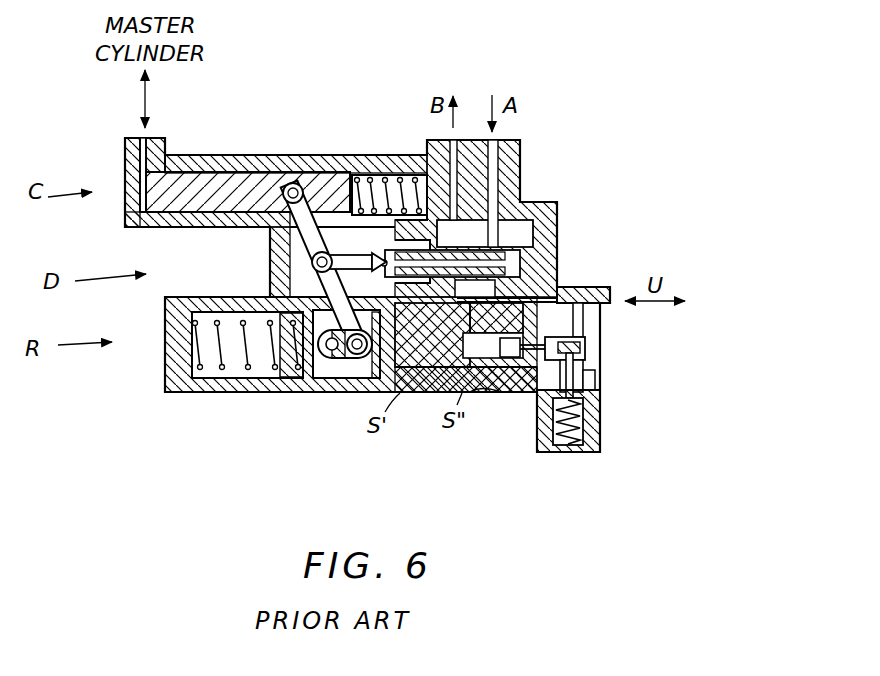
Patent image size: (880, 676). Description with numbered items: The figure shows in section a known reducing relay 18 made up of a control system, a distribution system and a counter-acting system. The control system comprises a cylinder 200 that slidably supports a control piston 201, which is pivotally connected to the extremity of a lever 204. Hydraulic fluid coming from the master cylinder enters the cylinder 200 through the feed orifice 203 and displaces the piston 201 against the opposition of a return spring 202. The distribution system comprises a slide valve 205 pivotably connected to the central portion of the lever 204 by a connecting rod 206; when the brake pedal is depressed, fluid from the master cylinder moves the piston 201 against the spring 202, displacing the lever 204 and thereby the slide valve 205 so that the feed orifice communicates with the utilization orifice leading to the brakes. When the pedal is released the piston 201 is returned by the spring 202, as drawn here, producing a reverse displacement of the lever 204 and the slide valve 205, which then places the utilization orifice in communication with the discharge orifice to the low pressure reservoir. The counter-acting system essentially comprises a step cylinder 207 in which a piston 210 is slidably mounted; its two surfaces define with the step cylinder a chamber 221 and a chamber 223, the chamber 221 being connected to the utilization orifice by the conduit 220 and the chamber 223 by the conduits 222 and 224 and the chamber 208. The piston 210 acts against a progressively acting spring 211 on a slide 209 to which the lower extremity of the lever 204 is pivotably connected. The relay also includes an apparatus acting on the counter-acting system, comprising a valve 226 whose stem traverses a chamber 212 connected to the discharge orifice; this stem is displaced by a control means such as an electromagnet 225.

The reducing relay 18 is at (558, 95).
The cylinder 200 is at (125, 213).
The control piston 201 is at (243, 187).
The return spring 202 is at (383, 187).
The feed orifice 203 is at (140, 153).
The lever 204 is at (302, 232).
The slide valve 205 is at (520, 255).
The connecting rod 206 is at (360, 255).
The step cylinder 207 is at (400, 293).
The chamber 208 is at (575, 342).
The slide 209 is at (292, 393).
The piston 210 is at (380, 397).
The progressively acting spring 211 is at (205, 393).
The chamber 212 is at (590, 385).
The conduit 220 is at (566, 303).
The chamber 221 is at (432, 393).
The conduit 222 is at (537, 393).
The chamber 223 is at (485, 398).
The conduit 224 is at (583, 322).
The electromagnet 225 is at (585, 453).
The valve 226 is at (583, 365).